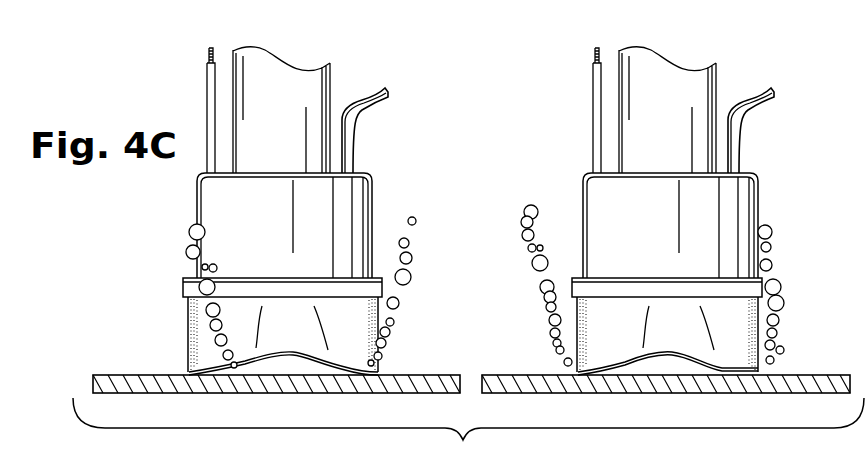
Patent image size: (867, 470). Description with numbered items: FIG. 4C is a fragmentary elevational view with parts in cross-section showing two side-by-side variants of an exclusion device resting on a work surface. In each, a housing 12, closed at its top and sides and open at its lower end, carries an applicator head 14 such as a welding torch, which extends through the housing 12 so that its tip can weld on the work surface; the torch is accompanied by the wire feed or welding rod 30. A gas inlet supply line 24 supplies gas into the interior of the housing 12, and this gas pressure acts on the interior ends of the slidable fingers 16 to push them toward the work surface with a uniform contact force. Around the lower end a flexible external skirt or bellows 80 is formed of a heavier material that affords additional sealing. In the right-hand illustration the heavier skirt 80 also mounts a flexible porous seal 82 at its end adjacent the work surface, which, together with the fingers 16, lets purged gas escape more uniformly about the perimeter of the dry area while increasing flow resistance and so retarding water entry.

The housing 12 is at (208, 200).
The applicator head 14 is at (262, 60).
The fingers 16 is at (193, 370).
The gas inlet supply line 24 is at (389, 99).
The welding rod 30 is at (208, 58).
The flexible external skirt 80 is at (258, 328).
The flexible porous seal 82 is at (727, 369).